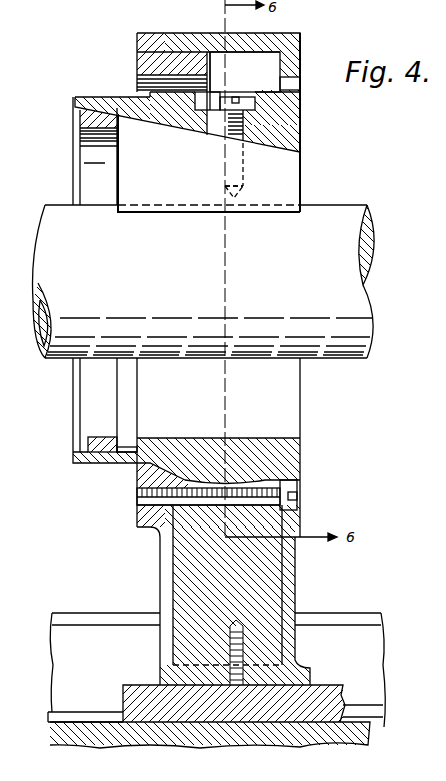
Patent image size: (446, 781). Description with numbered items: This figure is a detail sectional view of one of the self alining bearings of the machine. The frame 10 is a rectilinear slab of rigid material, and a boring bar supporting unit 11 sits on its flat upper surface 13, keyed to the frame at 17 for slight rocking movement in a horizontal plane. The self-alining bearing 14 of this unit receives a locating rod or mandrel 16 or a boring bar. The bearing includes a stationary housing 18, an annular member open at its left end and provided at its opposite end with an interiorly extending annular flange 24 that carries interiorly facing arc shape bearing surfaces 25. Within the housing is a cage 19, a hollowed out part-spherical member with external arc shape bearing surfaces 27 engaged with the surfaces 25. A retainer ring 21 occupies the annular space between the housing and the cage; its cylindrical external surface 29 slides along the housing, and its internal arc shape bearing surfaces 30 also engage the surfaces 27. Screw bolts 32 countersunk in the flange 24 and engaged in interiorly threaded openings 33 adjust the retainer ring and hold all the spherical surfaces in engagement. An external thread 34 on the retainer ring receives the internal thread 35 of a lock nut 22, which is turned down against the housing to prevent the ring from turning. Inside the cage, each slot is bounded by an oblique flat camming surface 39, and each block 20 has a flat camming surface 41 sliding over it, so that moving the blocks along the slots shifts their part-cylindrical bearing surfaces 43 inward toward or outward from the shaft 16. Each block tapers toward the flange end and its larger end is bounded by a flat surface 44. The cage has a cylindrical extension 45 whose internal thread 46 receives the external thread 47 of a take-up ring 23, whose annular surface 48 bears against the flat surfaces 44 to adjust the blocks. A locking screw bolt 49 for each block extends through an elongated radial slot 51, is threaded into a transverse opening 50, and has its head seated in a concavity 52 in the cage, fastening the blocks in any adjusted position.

The frame 10 is at (373, 735).
The boring bar supporting unit 11 is at (292, 585).
The flat upper surface 13 is at (46, 712).
The self-alining bearing 14 is at (296, 66).
The locating rod or mandrel 16 is at (378, 322).
The key 17 is at (343, 715).
The stationary housing 18 is at (278, 36).
The cage 19 is at (295, 123).
The block 20 is at (292, 182).
The retainer ring 21 is at (142, 478).
The lock nut 22 is at (152, 515).
The take-up ring 23 is at (95, 438).
The interiorly extending annular flange 24 is at (300, 472).
The arc shape bearing surface 25 is at (300, 460).
The arc shape bearing surface 27 is at (247, 478).
The external surface 29 is at (170, 36).
The arc shape bearing surface 30 is at (172, 477).
The screw bolt 32 is at (300, 500).
The interiorly threaded opening 33 is at (146, 498).
The external thread 34 is at (142, 57).
The internal thread 35 is at (164, 522).
The flat camming surface 39 is at (186, 135).
The flat camming surface 41 is at (250, 141).
The part-cylindrical bearing surface 43 is at (280, 216).
The flat surface 44 is at (118, 175).
The cylindrical extension 45 is at (86, 460).
The internal thread 46 is at (124, 458).
The external thread 47 is at (78, 108).
The annular surface 48 is at (122, 442).
The locking screw bolt 49 is at (242, 108).
The internally threaded transverse opening 50 is at (247, 193).
The radial slot 51 is at (212, 142).
The concavity 52 is at (215, 100).